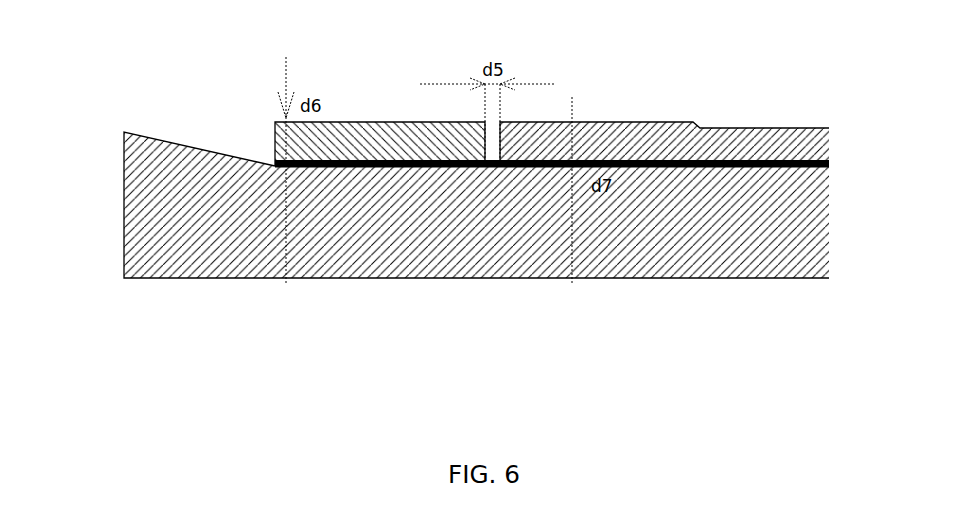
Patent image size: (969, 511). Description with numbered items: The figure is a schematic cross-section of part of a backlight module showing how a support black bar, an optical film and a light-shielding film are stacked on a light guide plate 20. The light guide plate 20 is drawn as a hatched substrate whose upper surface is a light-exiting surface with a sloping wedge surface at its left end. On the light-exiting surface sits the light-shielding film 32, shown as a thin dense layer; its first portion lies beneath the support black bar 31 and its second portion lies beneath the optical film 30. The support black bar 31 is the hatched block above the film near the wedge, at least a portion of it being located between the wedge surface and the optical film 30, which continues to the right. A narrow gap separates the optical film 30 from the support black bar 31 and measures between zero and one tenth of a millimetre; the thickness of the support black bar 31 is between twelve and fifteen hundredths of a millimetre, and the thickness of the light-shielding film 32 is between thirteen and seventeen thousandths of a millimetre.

The light guide plate 20 is at (123, 203).
The optical film 30 is at (584, 86).
The support black bar 31 is at (352, 138).
The light-shielding film 32 is at (407, 162).